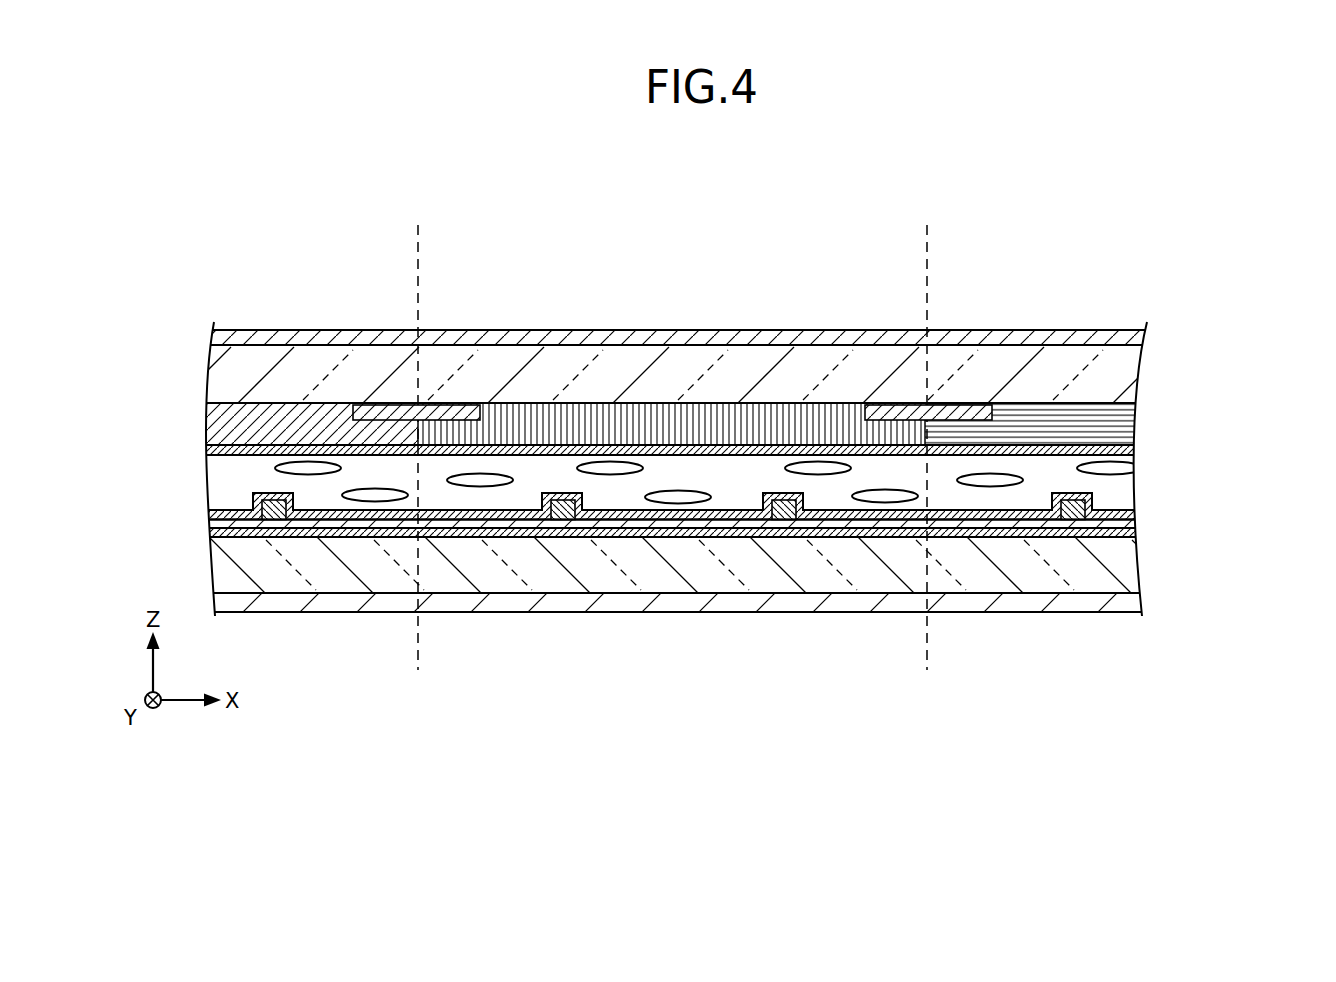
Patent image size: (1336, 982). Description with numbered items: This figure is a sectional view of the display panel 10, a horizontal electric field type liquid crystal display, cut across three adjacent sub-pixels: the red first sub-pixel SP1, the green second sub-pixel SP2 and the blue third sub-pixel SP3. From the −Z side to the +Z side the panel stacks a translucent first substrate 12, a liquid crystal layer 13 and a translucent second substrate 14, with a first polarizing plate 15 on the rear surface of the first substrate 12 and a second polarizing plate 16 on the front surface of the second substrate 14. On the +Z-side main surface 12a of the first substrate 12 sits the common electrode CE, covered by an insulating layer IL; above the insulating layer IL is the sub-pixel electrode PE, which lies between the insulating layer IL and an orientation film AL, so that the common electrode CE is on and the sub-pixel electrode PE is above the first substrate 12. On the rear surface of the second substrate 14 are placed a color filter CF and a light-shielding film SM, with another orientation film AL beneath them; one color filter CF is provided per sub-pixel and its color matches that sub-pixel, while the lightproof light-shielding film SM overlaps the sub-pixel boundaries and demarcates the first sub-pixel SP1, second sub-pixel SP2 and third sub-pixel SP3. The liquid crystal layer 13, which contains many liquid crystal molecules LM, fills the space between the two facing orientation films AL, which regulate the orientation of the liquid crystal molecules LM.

The display panel 10 is at (728, 448).
The first substrate 12 is at (1118, 567).
The main surface 12a is at (240, 532).
The liquid crystal layer 13 is at (1118, 479).
The second substrate 14 is at (1118, 377).
The first polarizing plate 15 is at (707, 593).
The second polarizing plate 16 is at (1120, 344).
The orientation film AL is at (1118, 448).
The insulating layer IL is at (1120, 524).
The common electrode CE is at (1122, 533).
The sub-pixel electrode PE is at (278, 497).
The color filter CF is at (262, 403).
The light-shielding film SM is at (458, 405).
The liquid crystal molecule LM is at (678, 497).
The first sub-pixel SP1 is at (335, 185).
The second sub-pixel SP2 is at (695, 185).
The third sub-pixel SP3 is at (1062, 185).